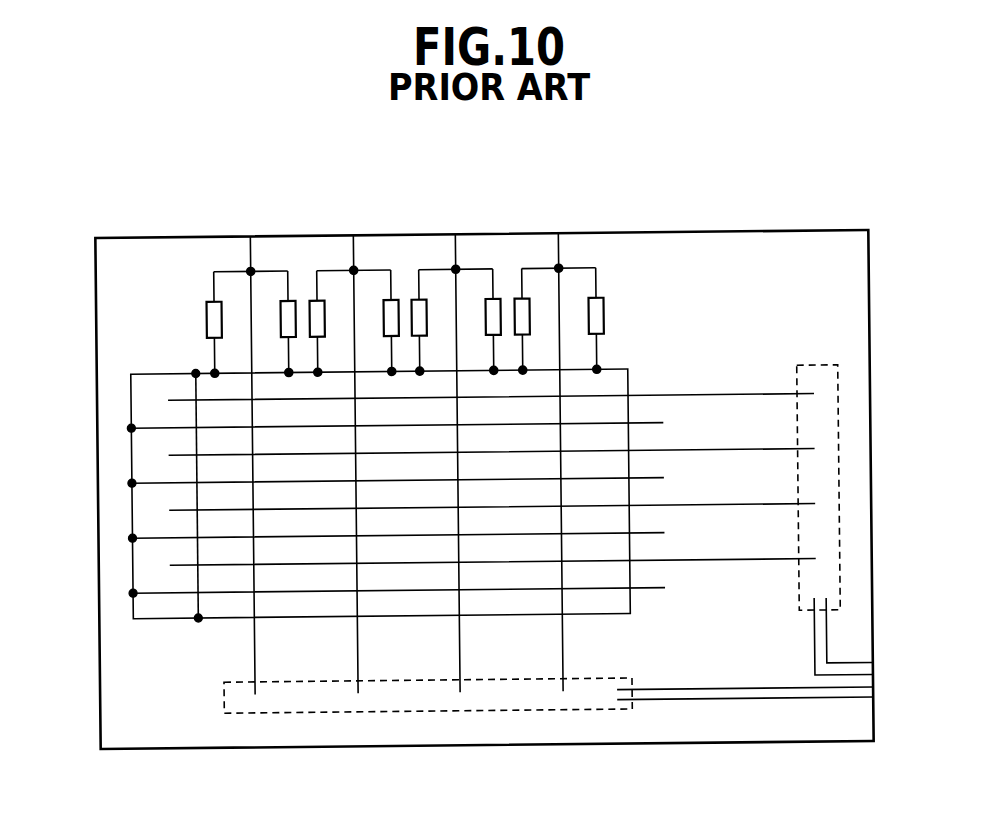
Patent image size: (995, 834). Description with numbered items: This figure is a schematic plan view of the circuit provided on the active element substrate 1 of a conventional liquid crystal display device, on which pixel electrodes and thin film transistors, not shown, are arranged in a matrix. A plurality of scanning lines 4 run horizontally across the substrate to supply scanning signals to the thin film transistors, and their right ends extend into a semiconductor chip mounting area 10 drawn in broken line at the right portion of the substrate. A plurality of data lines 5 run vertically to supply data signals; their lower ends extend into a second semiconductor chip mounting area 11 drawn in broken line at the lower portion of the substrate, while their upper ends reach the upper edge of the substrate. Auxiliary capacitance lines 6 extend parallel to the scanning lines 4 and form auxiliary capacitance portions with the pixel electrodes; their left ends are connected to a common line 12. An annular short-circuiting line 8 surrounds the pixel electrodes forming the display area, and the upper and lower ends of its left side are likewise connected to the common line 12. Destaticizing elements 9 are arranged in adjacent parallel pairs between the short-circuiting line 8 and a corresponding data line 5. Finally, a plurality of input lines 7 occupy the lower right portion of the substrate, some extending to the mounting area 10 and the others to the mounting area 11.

The active element substrate 1 is at (711, 226).
The scanning lines 4 is at (738, 396).
The data lines 5 is at (255, 655).
The auxiliary capacitance lines 6 is at (650, 425).
The input lines 7 is at (875, 662).
The short-circuiting line 8 is at (622, 370).
The destaticizing elements 9 is at (207, 319).
The semiconductor chip mounting area 10 is at (832, 466).
The semiconductor chip mounting area 11 is at (433, 700).
The common line 12 is at (132, 466).